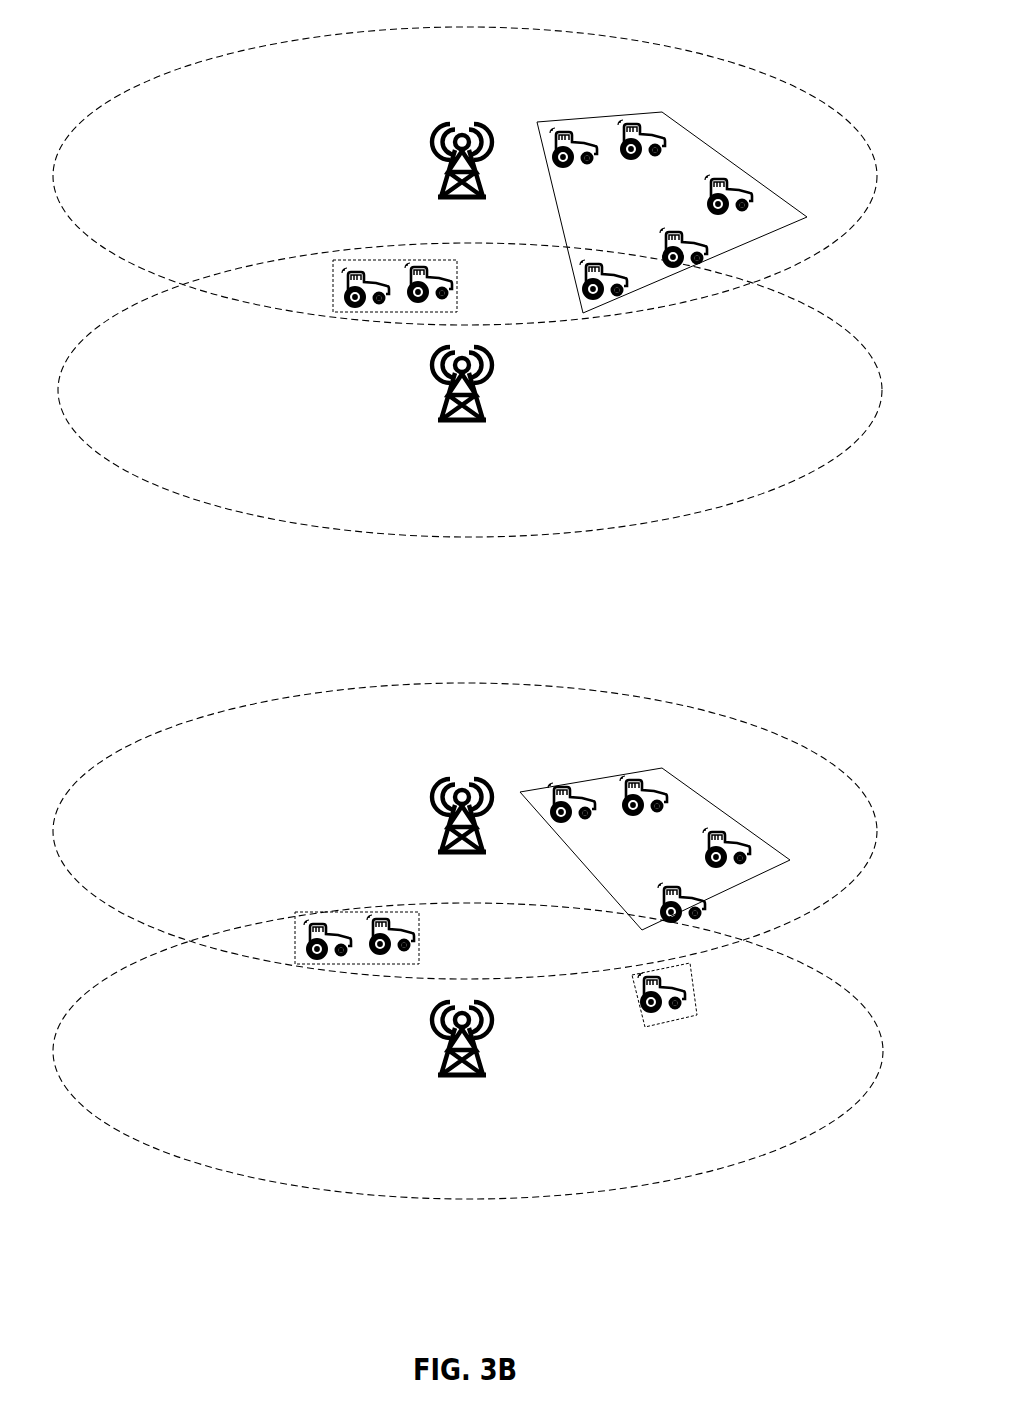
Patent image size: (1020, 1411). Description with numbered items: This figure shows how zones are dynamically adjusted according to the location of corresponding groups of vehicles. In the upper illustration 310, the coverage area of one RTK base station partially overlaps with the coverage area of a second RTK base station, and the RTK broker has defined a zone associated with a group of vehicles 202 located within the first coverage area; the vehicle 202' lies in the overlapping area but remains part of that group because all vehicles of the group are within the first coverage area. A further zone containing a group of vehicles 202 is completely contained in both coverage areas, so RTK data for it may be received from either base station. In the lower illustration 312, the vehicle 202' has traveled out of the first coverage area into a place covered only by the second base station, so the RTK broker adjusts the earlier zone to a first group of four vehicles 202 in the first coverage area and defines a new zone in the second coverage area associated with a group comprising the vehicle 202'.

The vehicle 202 is at (512, 538).
The vehicle 202' is at (646, 631).
The illustration 310 is at (825, 51).
The illustration 312 is at (825, 706).